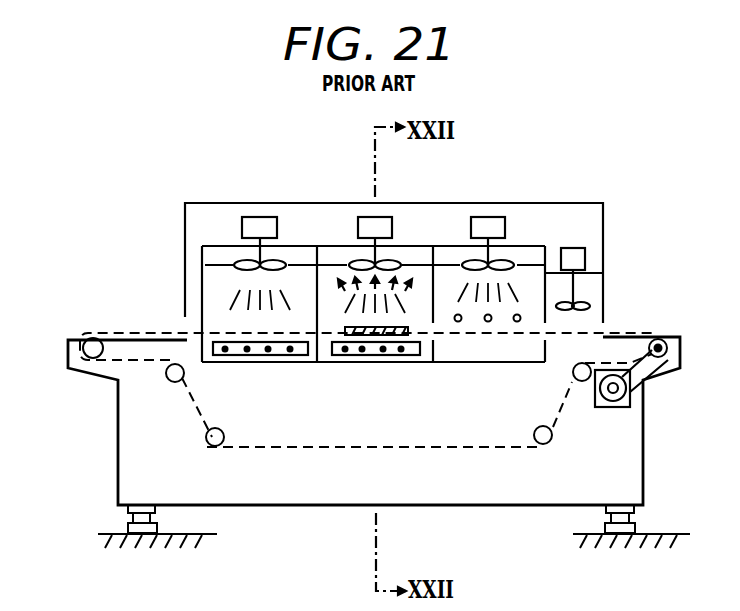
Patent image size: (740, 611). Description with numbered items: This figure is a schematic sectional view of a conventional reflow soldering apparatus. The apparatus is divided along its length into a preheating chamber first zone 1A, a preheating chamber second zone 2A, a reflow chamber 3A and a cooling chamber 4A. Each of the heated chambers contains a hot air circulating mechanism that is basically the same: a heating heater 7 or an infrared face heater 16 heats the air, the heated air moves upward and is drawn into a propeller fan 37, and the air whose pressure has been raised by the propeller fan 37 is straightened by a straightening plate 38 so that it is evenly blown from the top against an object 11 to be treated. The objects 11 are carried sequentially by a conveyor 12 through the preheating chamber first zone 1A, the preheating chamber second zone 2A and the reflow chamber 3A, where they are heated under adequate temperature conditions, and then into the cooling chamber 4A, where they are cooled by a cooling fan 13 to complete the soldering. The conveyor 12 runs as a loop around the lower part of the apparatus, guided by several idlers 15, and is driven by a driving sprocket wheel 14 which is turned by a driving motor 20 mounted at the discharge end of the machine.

The preheating chamber first zone 1A is at (221, 246).
The preheating chamber second zone 2A is at (324, 246).
The reflow chamber 3A is at (443, 246).
The cooling chamber 4A is at (597, 253).
The propeller fan 37 is at (277, 262).
The straightening plate 38 is at (290, 306).
The cooling fan 13 is at (590, 304).
The infrared face heater 16 is at (282, 356).
The object to be treated 11 is at (410, 322).
The heating heater 7 is at (457, 323).
The conveyor 12 is at (120, 330).
The idler 15 is at (87, 337).
The driving sprocket wheel 14 is at (664, 335).
The driving motor 20 is at (630, 397).